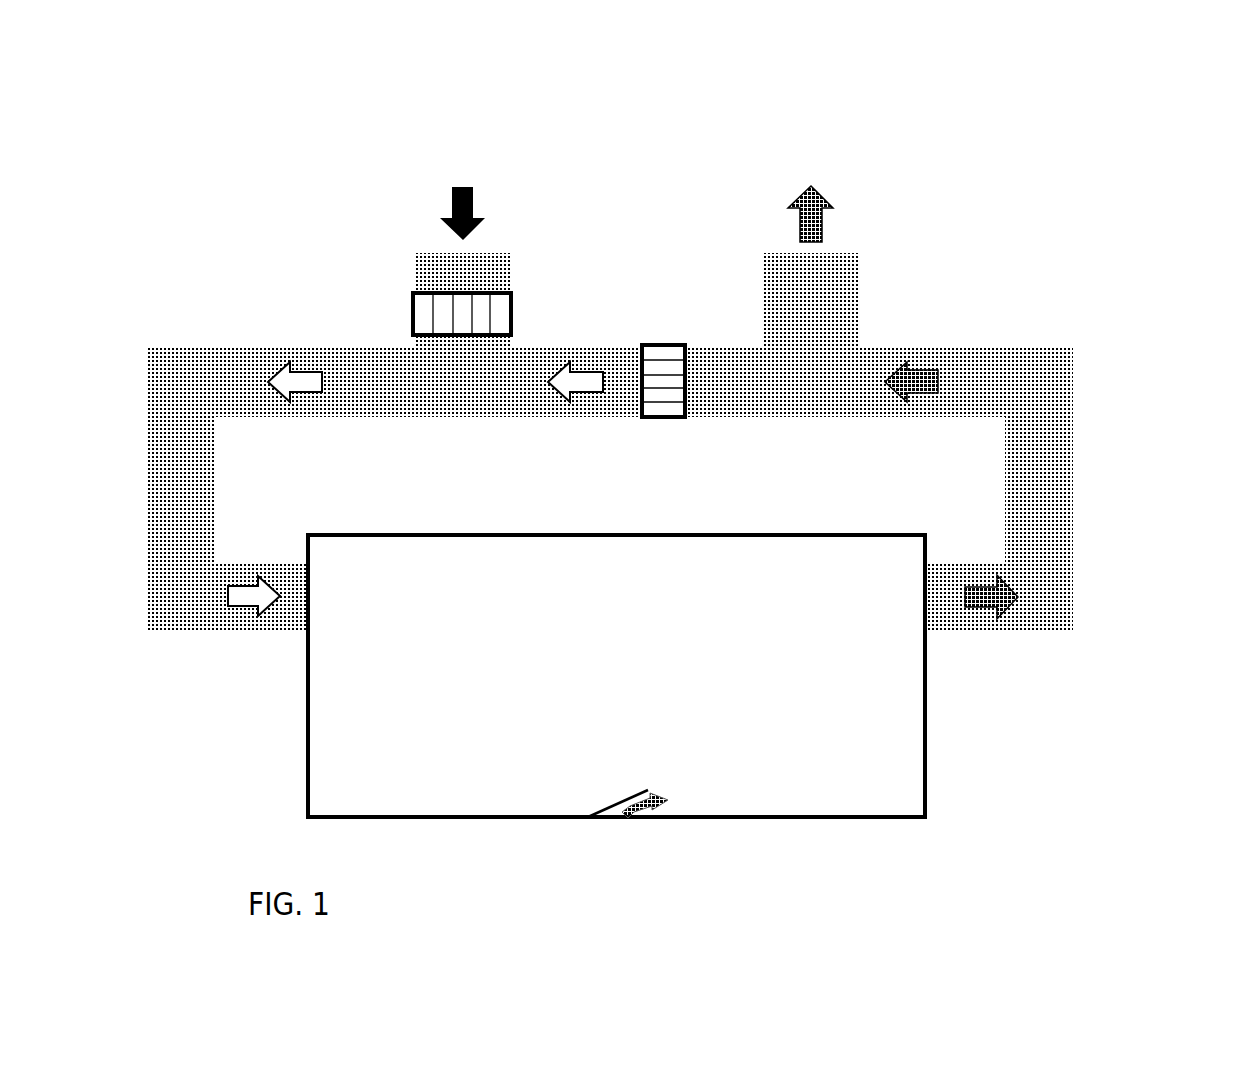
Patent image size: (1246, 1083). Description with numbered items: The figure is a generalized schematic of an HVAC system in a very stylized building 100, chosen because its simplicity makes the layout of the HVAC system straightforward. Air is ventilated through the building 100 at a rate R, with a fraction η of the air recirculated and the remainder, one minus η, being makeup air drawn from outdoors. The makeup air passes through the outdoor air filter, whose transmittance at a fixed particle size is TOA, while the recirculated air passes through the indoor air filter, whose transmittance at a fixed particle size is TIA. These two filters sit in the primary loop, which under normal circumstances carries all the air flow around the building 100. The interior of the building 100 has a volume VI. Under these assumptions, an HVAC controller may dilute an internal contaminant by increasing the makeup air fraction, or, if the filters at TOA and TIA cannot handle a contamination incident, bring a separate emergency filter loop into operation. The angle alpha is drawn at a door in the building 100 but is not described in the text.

The building 100 is at (1138, 86).
The transmittance of the outdoor air filter TOA is at (492, 315).
The transmittance of the indoor air filter TIA is at (663, 359).
The volume of the building's interior VI is at (616, 676).
The door opening angle alpha is at (628, 820).